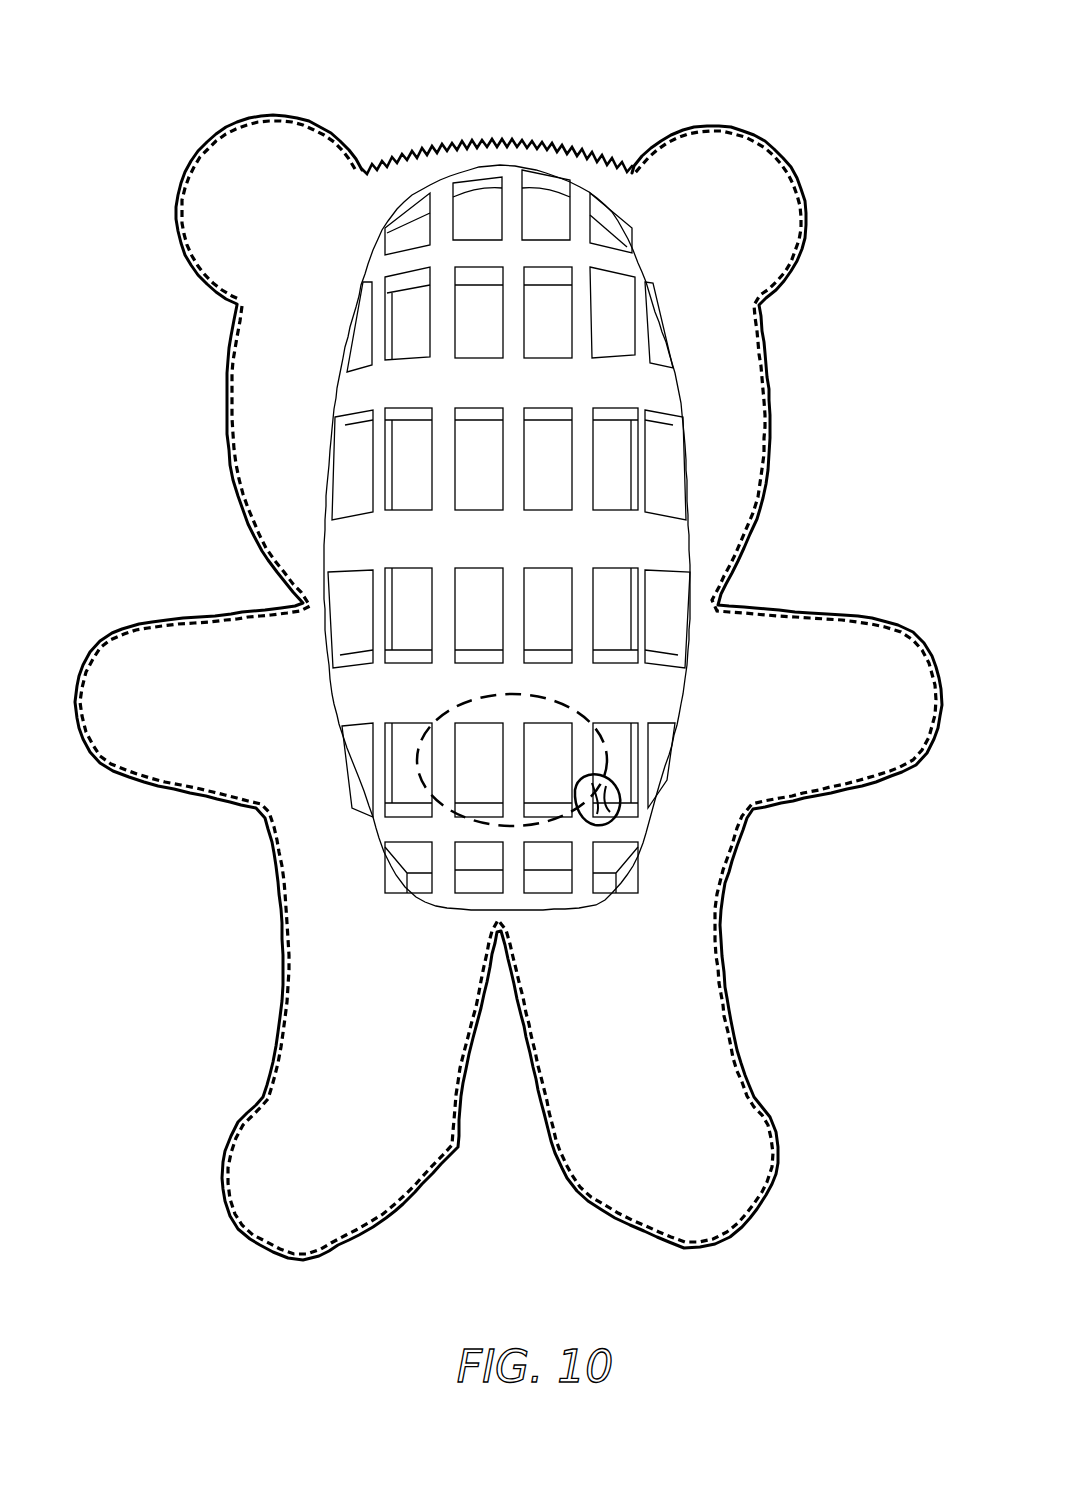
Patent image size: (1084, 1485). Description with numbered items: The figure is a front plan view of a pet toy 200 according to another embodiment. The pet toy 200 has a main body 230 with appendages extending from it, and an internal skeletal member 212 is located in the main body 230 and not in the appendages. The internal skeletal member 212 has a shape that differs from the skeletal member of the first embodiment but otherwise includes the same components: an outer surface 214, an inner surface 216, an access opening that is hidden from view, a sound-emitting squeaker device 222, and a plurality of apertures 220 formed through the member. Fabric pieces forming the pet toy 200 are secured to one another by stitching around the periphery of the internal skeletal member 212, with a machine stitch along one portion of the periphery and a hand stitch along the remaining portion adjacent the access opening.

The pet toy 200 is at (848, 142).
The internal skeletal member 212 is at (640, 390).
The outer surface 214 is at (508, 185).
The inner surface 216 is at (405, 220).
The apertures 220 is at (455, 458).
The sound-emitting squeaker device 222 is at (473, 768).
The main body 230 is at (759, 536).